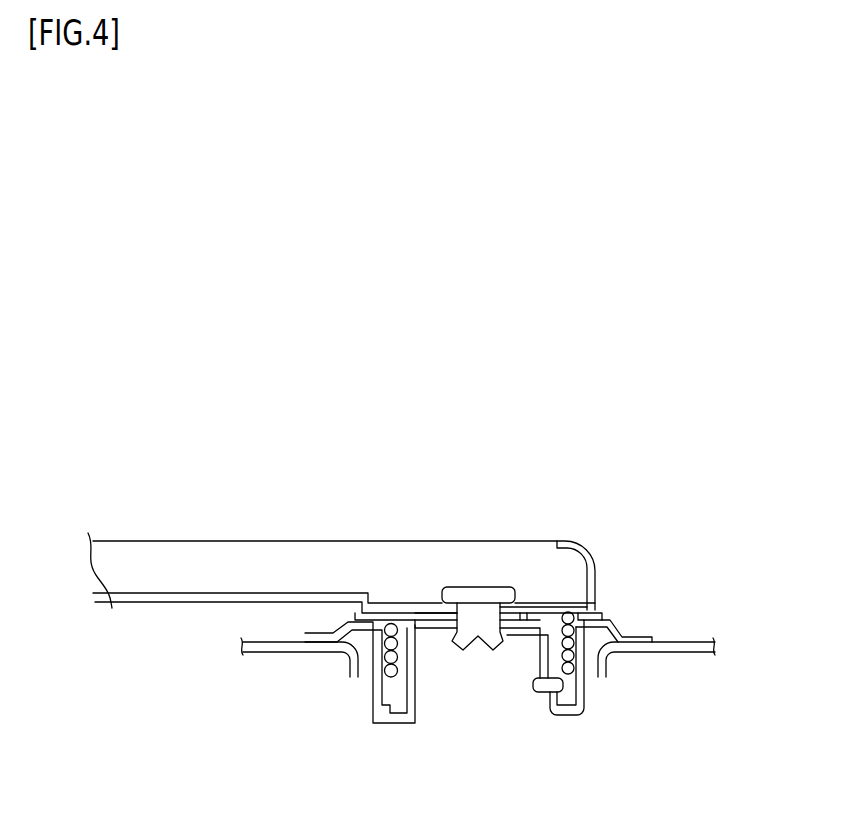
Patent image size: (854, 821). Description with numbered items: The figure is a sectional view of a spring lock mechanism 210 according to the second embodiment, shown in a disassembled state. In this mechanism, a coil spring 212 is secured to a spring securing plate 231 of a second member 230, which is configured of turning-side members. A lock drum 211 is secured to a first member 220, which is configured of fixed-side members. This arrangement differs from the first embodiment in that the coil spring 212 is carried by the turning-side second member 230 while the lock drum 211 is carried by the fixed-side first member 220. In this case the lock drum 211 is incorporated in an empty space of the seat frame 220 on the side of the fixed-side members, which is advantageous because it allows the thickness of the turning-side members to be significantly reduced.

The spring lock mechanism 210 is at (488, 585).
The lock drum 211 is at (375, 680).
The coil spring 212 is at (575, 671).
The first member 220 is at (302, 652).
The second member 230 is at (246, 557).
The spring securing plate 231 is at (550, 612).